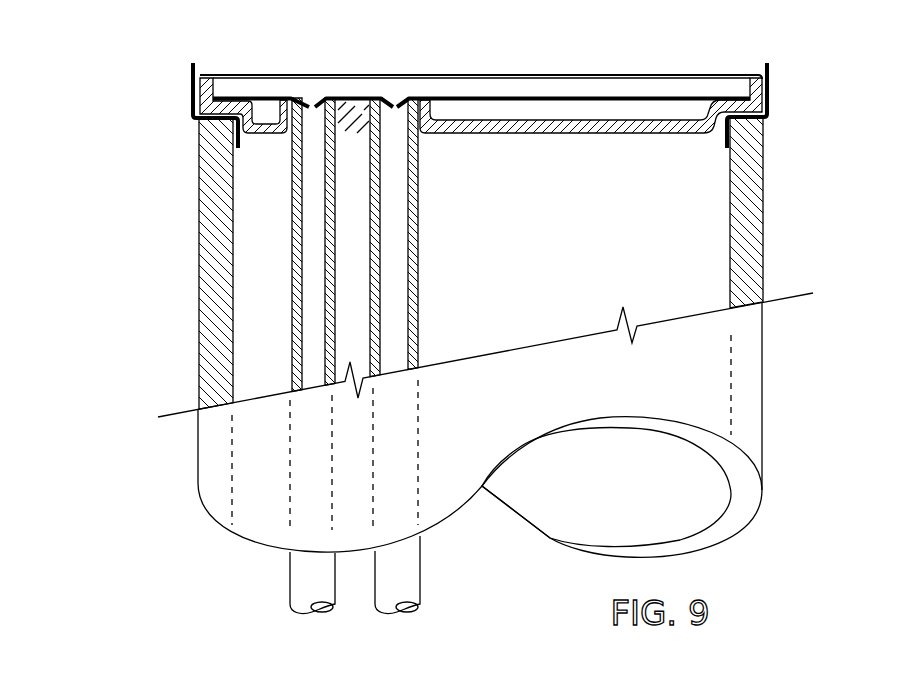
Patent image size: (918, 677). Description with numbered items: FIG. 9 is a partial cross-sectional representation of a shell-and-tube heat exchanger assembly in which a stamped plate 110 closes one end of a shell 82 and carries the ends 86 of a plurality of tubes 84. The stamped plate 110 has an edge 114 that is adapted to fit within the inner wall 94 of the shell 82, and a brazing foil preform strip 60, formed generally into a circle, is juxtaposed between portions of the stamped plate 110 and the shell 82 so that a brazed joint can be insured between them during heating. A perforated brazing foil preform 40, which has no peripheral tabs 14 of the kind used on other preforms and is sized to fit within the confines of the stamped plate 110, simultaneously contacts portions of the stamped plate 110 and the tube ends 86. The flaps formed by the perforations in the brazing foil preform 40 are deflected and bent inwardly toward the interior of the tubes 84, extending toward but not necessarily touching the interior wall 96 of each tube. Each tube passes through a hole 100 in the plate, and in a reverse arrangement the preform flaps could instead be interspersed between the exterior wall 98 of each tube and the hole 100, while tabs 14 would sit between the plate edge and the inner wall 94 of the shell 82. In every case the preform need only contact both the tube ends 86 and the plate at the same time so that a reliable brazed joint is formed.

The tabs 14 is at (231, 137).
The brazing foil preform 40 is at (561, 85).
The brazing foil preform strip 60 is at (772, 91).
The shell 82 is at (195, 348).
The tubes 84 is at (445, 272).
The tube ends 86 is at (406, 112).
The inner wall of the shell 94 is at (726, 270).
The interior wall of each tube 96 is at (310, 225).
The exterior wall of each tube 98 is at (281, 295).
The holes 100 is at (283, 143).
The stamped plate 110 is at (642, 69).
The edge 114 is at (730, 137).